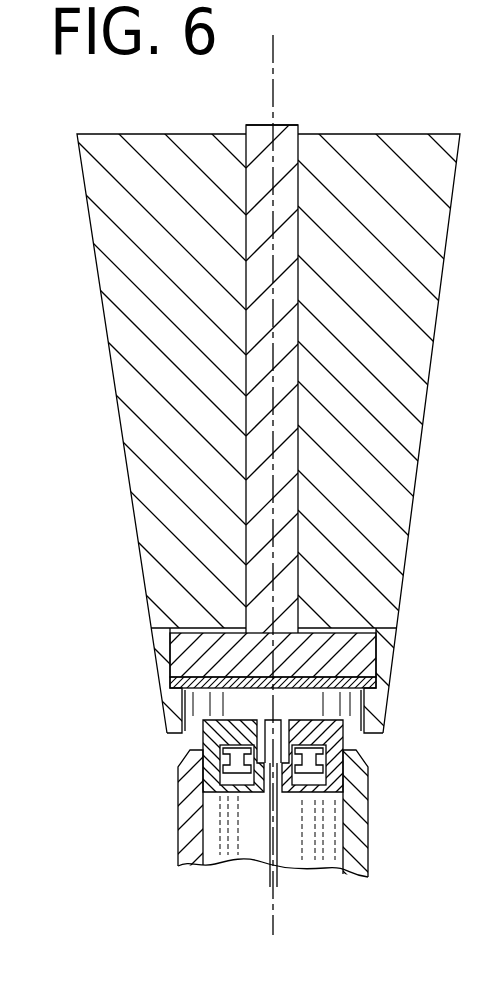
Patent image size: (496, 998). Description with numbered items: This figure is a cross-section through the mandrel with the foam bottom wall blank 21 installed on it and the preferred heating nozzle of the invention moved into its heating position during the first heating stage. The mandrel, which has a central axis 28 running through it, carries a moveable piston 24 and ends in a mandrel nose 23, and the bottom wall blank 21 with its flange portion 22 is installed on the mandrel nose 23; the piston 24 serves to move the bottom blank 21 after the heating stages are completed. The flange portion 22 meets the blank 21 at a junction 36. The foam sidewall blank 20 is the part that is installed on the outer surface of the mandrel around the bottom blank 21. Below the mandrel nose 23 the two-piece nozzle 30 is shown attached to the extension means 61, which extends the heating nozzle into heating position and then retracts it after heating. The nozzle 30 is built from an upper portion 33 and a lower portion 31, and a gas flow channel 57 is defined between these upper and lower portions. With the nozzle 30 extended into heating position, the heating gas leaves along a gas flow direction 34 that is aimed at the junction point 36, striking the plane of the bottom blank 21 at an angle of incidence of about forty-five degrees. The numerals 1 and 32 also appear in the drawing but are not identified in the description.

The main body 1 is at (408, 244).
The foam sidewall blank 20 is at (495, 866).
The foam bottom wall blank 21 is at (330, 676).
The flange portion 22 is at (373, 723).
The mandrel nose 23 is at (158, 650).
The moveable piston 24 is at (259, 125).
The central axis 28 is at (275, 102).
The two-piece nozzle 30 is at (346, 742).
The lower portion 31 is at (317, 778).
The gasket 32 is at (321, 686).
The upper portion 33 is at (253, 768).
The gas flow direction 34 is at (356, 699).
The junction 36 is at (357, 697).
The gas flow channel 57 is at (348, 762).
The extension means 61 is at (370, 873).